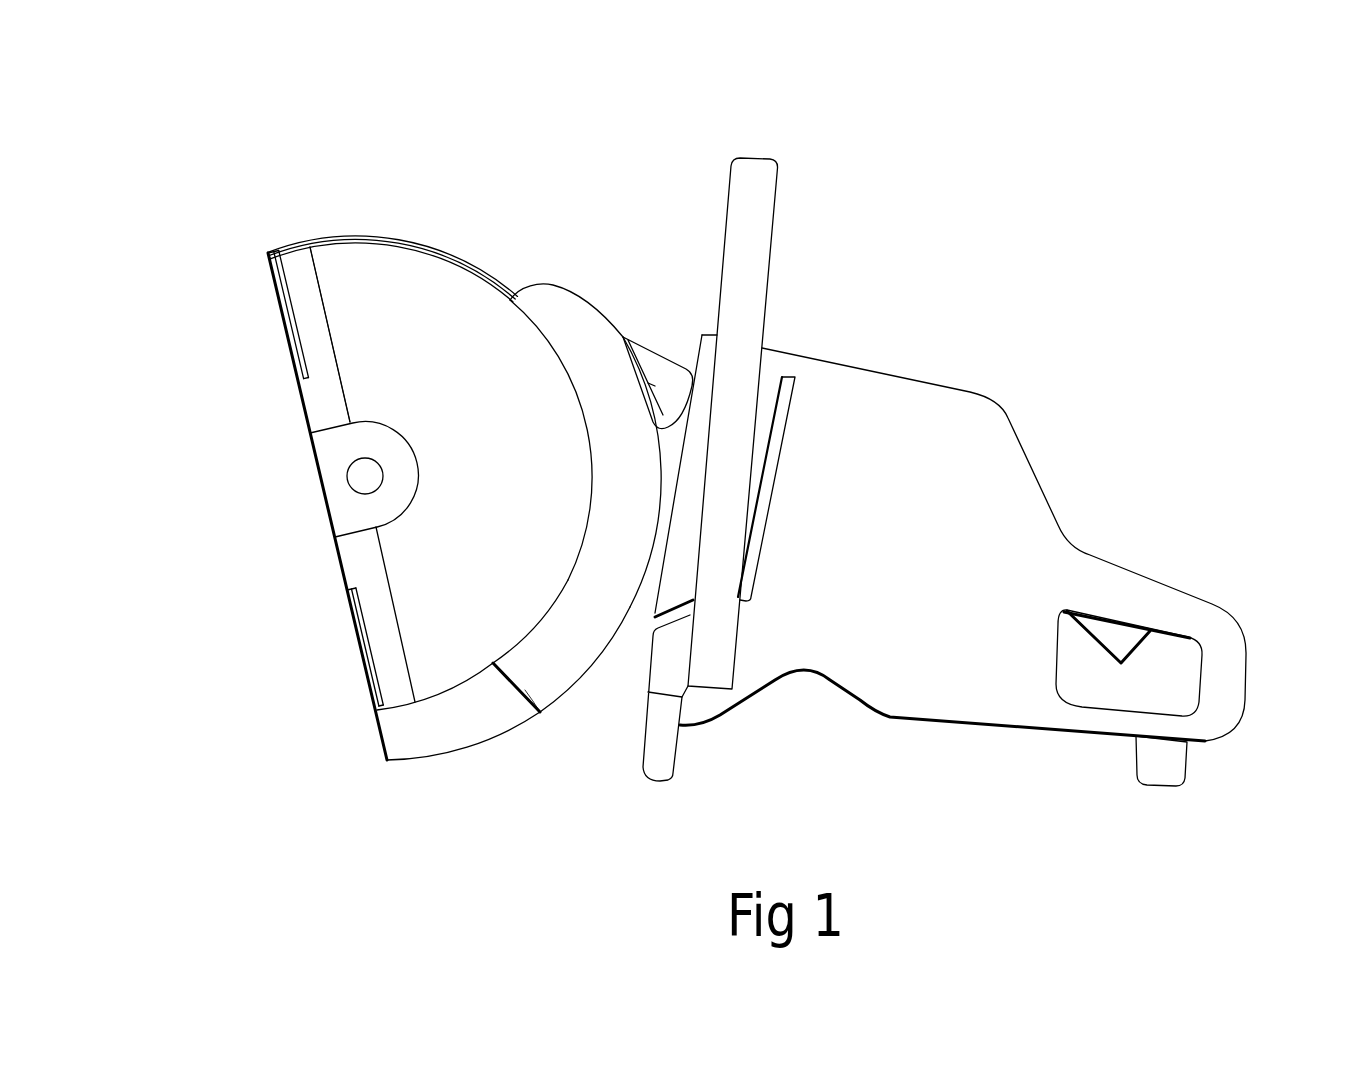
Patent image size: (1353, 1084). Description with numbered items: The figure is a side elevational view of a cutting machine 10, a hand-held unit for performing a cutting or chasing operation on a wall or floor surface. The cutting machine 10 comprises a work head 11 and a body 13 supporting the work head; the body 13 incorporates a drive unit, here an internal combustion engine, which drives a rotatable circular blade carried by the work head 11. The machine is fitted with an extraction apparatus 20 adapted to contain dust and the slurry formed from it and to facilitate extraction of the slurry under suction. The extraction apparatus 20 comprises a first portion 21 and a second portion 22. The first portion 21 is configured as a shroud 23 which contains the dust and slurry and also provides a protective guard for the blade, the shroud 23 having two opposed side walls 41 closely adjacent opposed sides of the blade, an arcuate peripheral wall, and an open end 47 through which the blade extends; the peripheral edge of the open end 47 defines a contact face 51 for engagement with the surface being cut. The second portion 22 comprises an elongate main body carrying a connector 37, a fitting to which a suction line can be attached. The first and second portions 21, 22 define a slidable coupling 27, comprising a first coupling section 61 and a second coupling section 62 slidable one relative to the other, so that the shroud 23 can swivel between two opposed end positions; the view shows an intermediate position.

The cutting machine 10 is at (525, 193).
The work head 11 is at (382, 223).
The body 13 is at (883, 373).
The extraction apparatus 20 is at (573, 285).
The first portion 21 is at (420, 534).
The second portion 22 is at (547, 683).
The shroud 23 is at (358, 385).
The slidable coupling 27 is at (533, 710).
The connector 37 is at (657, 363).
The side walls 41 is at (352, 325).
The open end 47 is at (310, 438).
The contact face 51 is at (367, 690).
The first coupling section 61 is at (438, 718).
The second coupling section 62 is at (572, 643).